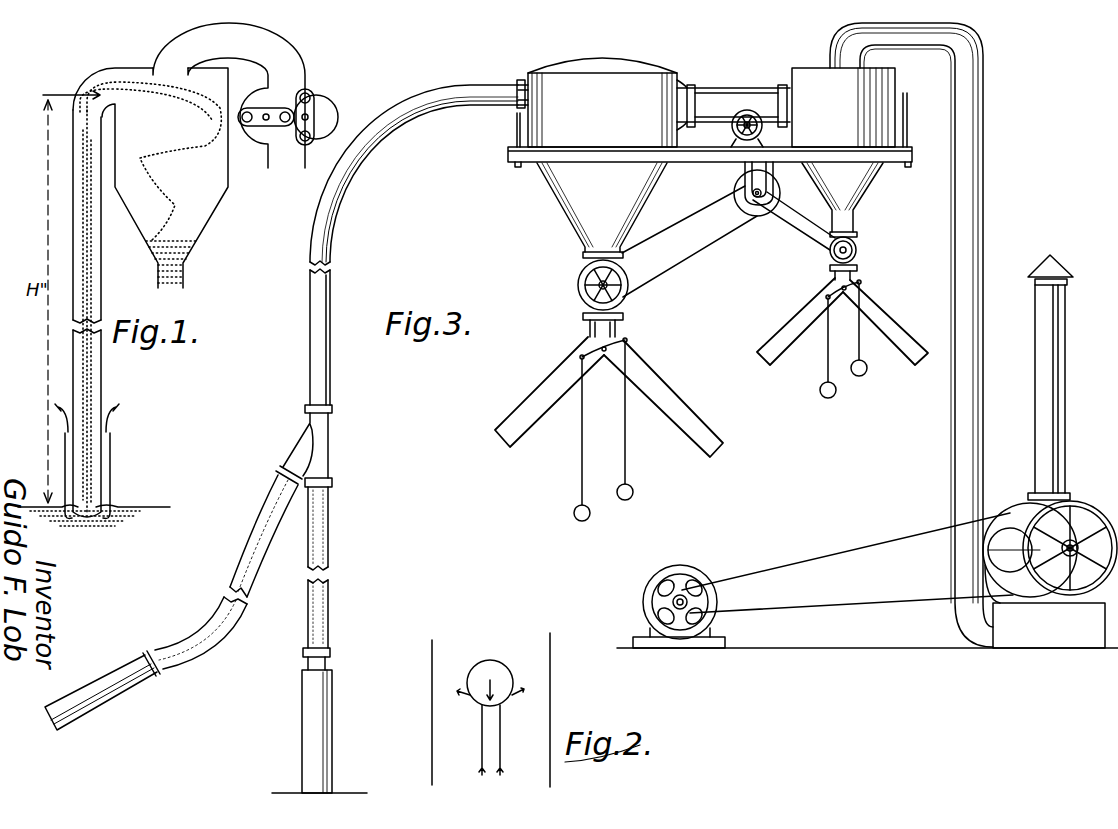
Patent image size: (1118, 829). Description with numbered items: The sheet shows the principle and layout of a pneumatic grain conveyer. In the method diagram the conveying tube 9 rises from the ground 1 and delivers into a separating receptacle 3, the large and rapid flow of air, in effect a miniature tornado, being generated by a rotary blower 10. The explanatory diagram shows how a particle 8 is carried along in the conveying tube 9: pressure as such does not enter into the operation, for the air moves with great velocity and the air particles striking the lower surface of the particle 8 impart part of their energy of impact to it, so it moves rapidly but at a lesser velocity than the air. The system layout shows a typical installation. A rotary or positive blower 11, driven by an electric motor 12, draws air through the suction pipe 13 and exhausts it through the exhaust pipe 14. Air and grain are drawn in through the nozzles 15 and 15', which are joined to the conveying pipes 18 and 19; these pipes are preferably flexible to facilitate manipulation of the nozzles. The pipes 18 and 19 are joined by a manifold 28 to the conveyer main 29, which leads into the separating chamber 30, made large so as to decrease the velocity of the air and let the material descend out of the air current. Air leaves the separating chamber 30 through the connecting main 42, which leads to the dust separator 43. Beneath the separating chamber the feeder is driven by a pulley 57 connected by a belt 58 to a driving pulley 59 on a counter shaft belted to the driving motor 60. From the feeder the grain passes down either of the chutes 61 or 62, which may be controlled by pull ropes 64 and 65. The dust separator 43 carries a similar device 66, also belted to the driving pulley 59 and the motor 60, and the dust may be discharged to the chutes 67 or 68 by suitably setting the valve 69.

In FIG. 1, the ground surface 1 is at (147, 507).
In FIG. 1, the cyclone separator receptacle 3 is at (210, 183).
In FIG. 2, the particle 8 is at (482, 670).
In FIG. 1, the conveying tube 9 is at (101, 396).
In FIG. 2, the conveying tube 9 is at (432, 693).
In FIG. 1, the rotary blower 10 is at (322, 97).
In FIG. 3, the rotary blower 11 is at (1055, 523).
In FIG. 3, the electric motor 12 is at (710, 597).
In FIG. 3, the suction pipe 13 is at (953, 407).
In FIG. 3, the exhaust pipe 14 is at (1048, 405).
In FIG. 3, the nozzle 15 is at (105, 690).
In FIG. 3, the nozzle 15' is at (326, 720).
In FIG. 3, the conveying pipe 18 is at (257, 542).
In FIG. 3, the conveying pipe 19 is at (327, 545).
In FIG. 3, the manifold 28 is at (317, 452).
In FIG. 3, the conveyer main 29 is at (330, 194).
In FIG. 3, the separating chamber 30 is at (565, 121).
In FIG. 3, the connecting main 42 is at (735, 85).
In FIG. 3, the dust separator 43 is at (820, 84).
In FIG. 3, the pulley 57 is at (578, 290).
In FIG. 3, the belt 58 is at (703, 238).
In FIG. 3, the driving pulley 59 is at (770, 183).
In FIG. 3, the driving motor 60 is at (732, 133).
In FIG. 3, the chute 61 is at (545, 395).
In FIG. 3, the chute 62 is at (675, 405).
In FIG. 3, the pull rope 64 is at (580, 450).
In FIG. 3, the pull rope 65 is at (627, 450).
In FIG. 3, the device 66 is at (858, 257).
In FIG. 3, the chute 67 is at (802, 320).
In FIG. 3, the chute 68 is at (893, 323).
In FIG. 3, the valve 69 is at (860, 283).